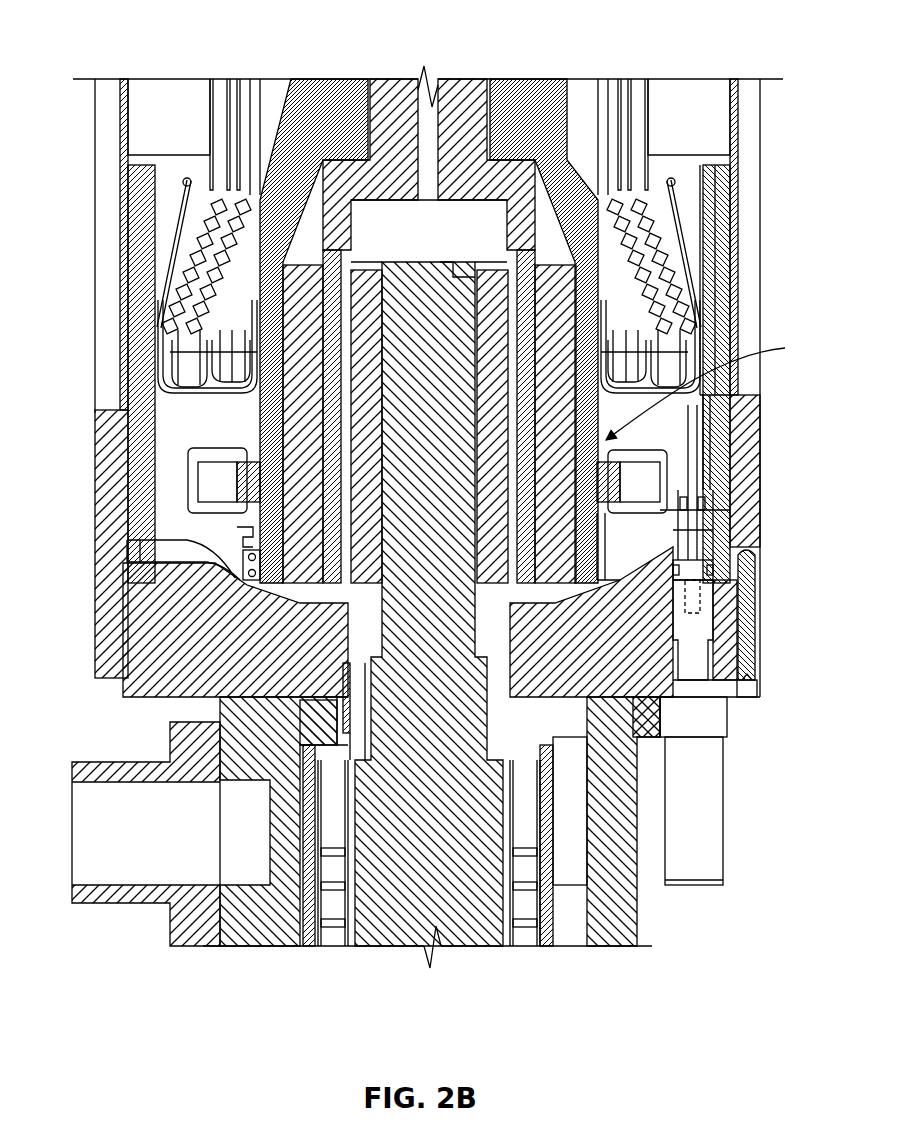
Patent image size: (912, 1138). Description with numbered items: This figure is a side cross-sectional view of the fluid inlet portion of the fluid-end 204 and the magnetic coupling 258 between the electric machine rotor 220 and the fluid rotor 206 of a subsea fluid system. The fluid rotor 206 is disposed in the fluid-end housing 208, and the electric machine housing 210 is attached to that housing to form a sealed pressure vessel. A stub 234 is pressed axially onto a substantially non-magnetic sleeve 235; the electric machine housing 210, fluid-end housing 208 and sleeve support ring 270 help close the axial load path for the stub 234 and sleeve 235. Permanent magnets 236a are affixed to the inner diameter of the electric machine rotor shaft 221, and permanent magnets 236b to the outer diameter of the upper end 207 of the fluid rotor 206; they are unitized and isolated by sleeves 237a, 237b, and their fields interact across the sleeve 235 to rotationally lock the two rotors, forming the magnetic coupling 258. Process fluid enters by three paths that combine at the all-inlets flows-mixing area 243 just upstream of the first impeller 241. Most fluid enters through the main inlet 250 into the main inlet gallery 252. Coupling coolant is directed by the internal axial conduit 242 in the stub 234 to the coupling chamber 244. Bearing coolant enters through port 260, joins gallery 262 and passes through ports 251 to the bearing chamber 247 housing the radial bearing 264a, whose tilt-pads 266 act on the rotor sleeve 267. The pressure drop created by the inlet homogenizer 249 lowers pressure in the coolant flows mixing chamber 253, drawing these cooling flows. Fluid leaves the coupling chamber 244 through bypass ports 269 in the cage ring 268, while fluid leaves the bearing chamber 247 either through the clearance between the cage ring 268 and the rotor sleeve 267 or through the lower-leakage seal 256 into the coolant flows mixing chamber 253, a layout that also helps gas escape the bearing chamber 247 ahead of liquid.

The fluid-end 204 is at (100, 750).
The fluid rotor 206 is at (476, 935).
The upper end of process fluid rotor 207 is at (462, 262).
The fluid-end housing 208 is at (580, 933).
The electric machine housing 210 is at (757, 433).
The electric machine rotor 220 is at (312, 93).
The electric machine rotor shaft 221 is at (463, 290).
The stub 234 is at (383, 90).
The sleeve 235 is at (528, 408).
The permanent magnets 236a is at (560, 290).
The permanent magnets 236b is at (575, 345).
The sleeve 237a is at (537, 330).
The sleeve 237b is at (507, 387).
The first impeller 241 is at (532, 772).
The internal axial conduit 242 is at (434, 105).
The all-inlets flows-mixing area 243 is at (495, 763).
The coupling chamber 244 is at (487, 207).
The bearing chamber 247 is at (343, 668).
The inlet homogenizer 249 is at (647, 718).
The main inlet 250 is at (88, 852).
The ports 251 is at (334, 698).
The main inlet gallery 252 is at (567, 870).
The coolant flows mixing chamber 253 is at (725, 660).
The seal 256 is at (300, 740).
The magnetic coupling 258 is at (719, 386).
The port 260 is at (746, 613).
The gallery 262 is at (695, 615).
The radial bearing 264a is at (334, 690).
The tilt-pads 266 is at (320, 685).
The rotor sleeve 267 is at (340, 572).
The cage ring 268 is at (300, 640).
The bypass ports 269 is at (520, 683).
The sleeve support ring 270 is at (515, 610).